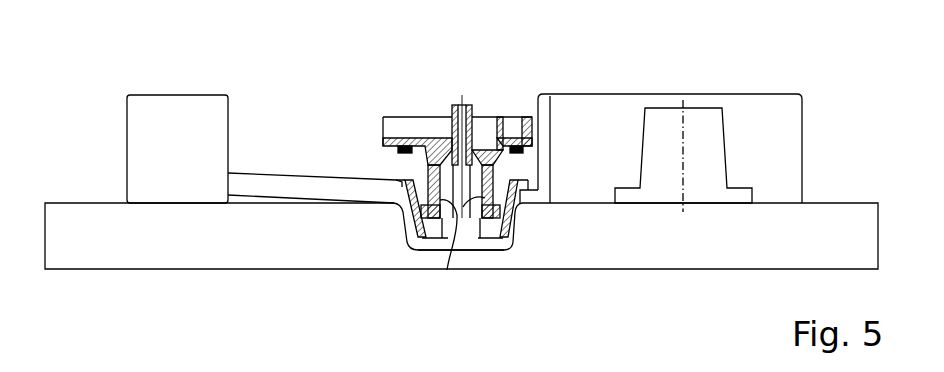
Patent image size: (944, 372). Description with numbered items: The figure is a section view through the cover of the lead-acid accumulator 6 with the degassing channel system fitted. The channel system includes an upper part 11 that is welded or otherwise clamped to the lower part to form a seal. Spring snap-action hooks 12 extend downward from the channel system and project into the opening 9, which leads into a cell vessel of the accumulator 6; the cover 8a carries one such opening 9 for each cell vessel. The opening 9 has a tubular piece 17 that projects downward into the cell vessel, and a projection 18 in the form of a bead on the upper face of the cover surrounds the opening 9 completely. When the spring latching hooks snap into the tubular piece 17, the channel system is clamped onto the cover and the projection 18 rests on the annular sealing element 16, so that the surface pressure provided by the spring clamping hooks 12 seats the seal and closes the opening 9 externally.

The accumulator 6 is at (220, 271).
The upper cover 8a is at (292, 173).
The opening 9 is at (483, 258).
The upper part 11 is at (462, 96).
The spring snap-action hook 12 is at (447, 270).
The annular sealing element 16 is at (395, 158).
The tubular piece 17 is at (402, 250).
The projection 18 is at (398, 178).